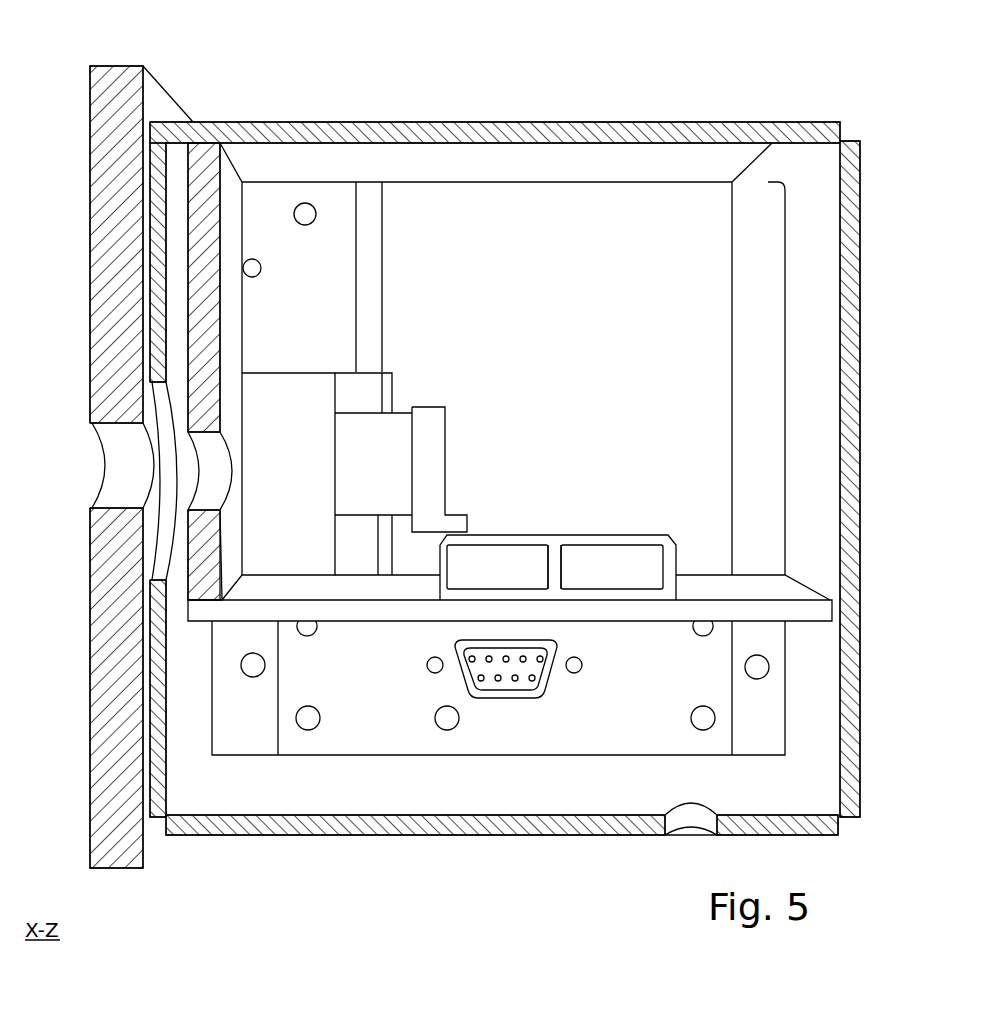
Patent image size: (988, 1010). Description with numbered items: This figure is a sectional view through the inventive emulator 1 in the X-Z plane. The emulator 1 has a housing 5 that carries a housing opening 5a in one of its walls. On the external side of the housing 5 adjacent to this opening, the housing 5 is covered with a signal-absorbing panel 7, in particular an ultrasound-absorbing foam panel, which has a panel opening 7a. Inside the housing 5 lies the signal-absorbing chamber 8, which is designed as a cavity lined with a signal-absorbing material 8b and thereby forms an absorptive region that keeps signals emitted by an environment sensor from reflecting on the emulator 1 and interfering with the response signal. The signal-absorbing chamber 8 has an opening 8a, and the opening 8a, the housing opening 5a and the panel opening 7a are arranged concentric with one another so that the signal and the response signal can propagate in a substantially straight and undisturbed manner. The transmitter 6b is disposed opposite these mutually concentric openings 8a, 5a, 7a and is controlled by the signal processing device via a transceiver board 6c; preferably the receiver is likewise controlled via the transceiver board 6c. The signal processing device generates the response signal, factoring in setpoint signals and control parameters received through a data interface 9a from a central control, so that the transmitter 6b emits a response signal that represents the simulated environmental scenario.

The emulator 1 is at (77, 52).
The housing 5 is at (860, 611).
The housing opening 5a is at (175, 495).
The transmitter 6b is at (362, 422).
The transceiver board 6c is at (445, 478).
The signal-absorbing panel 7 is at (94, 261).
The panel opening 7a is at (108, 486).
The signal-absorbing chamber 8 is at (298, 372).
The opening 8a is at (220, 468).
The signal-absorbing material 8b is at (313, 532).
The data interface 9a is at (548, 690).